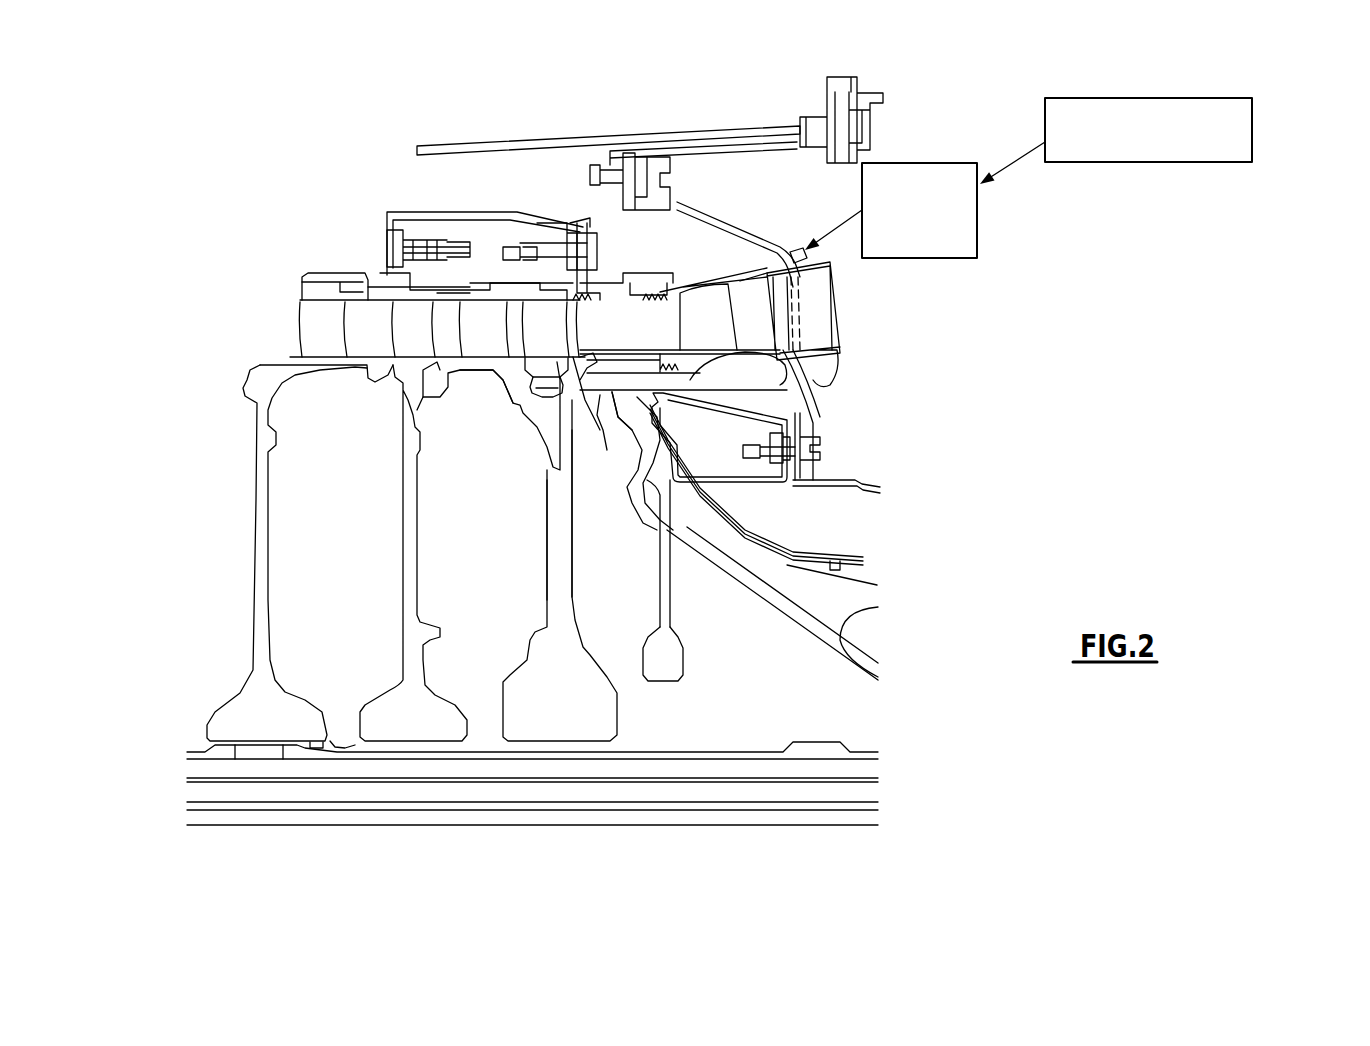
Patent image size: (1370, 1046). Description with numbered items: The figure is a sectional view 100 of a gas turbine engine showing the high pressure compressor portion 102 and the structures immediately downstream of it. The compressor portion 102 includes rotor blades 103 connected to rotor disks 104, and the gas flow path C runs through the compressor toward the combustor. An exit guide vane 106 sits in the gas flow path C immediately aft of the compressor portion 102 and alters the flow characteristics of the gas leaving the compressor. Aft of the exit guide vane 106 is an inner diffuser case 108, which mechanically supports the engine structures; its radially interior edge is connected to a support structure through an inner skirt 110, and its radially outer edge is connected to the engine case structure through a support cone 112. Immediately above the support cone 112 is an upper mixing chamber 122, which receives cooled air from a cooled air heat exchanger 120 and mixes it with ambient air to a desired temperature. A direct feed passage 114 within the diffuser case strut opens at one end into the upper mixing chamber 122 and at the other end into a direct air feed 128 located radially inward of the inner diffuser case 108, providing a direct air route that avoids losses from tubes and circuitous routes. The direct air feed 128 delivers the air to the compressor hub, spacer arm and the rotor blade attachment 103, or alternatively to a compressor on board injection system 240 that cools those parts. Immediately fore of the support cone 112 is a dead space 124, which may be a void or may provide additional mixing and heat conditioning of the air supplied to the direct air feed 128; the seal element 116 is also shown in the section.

The sectional view 100 is at (250, 232).
The high pressure compressor portion 102 is at (543, 337).
The rotor blades 103 is at (552, 437).
The rotor disks 104 is at (510, 390).
The exit guide vane 106 is at (637, 330).
The inner diffuser case 108 is at (840, 357).
The inner skirt 110 is at (843, 480).
The support cone 112 is at (703, 210).
The direct feed passage 114 is at (800, 317).
The seal bracket 116 is at (573, 290).
The cooled air heat exchanger 120 is at (1253, 122).
The upper mixing chamber 122 is at (980, 222).
The dead space 124 is at (757, 260).
The direct air feed 128 is at (797, 377).
The compressor on board injection (COBI) system 240 is at (614, 392).
The gas flow path C is at (325, 327).